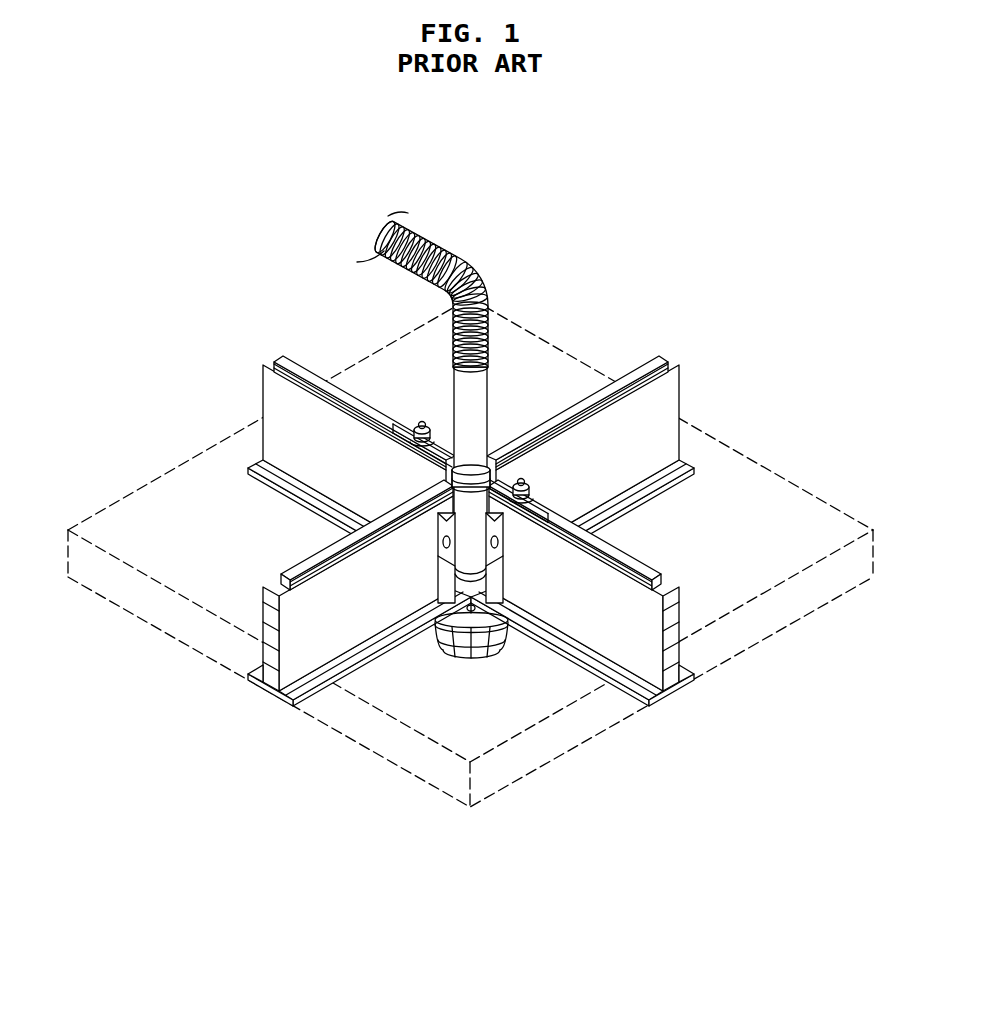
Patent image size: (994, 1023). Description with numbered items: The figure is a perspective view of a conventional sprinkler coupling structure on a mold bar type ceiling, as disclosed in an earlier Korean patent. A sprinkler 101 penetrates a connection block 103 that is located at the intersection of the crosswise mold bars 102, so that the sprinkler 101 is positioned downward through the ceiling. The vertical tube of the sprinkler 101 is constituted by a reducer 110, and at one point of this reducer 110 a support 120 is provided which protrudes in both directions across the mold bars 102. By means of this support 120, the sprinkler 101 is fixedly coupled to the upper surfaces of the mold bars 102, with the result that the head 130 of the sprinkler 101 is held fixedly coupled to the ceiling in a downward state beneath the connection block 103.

The sprinkler 101 is at (432, 705).
The mold bars 102 is at (663, 400).
The connection block 103 is at (488, 585).
The reducer 110 is at (473, 402).
The support 120 is at (440, 433).
The head 130 is at (479, 643).